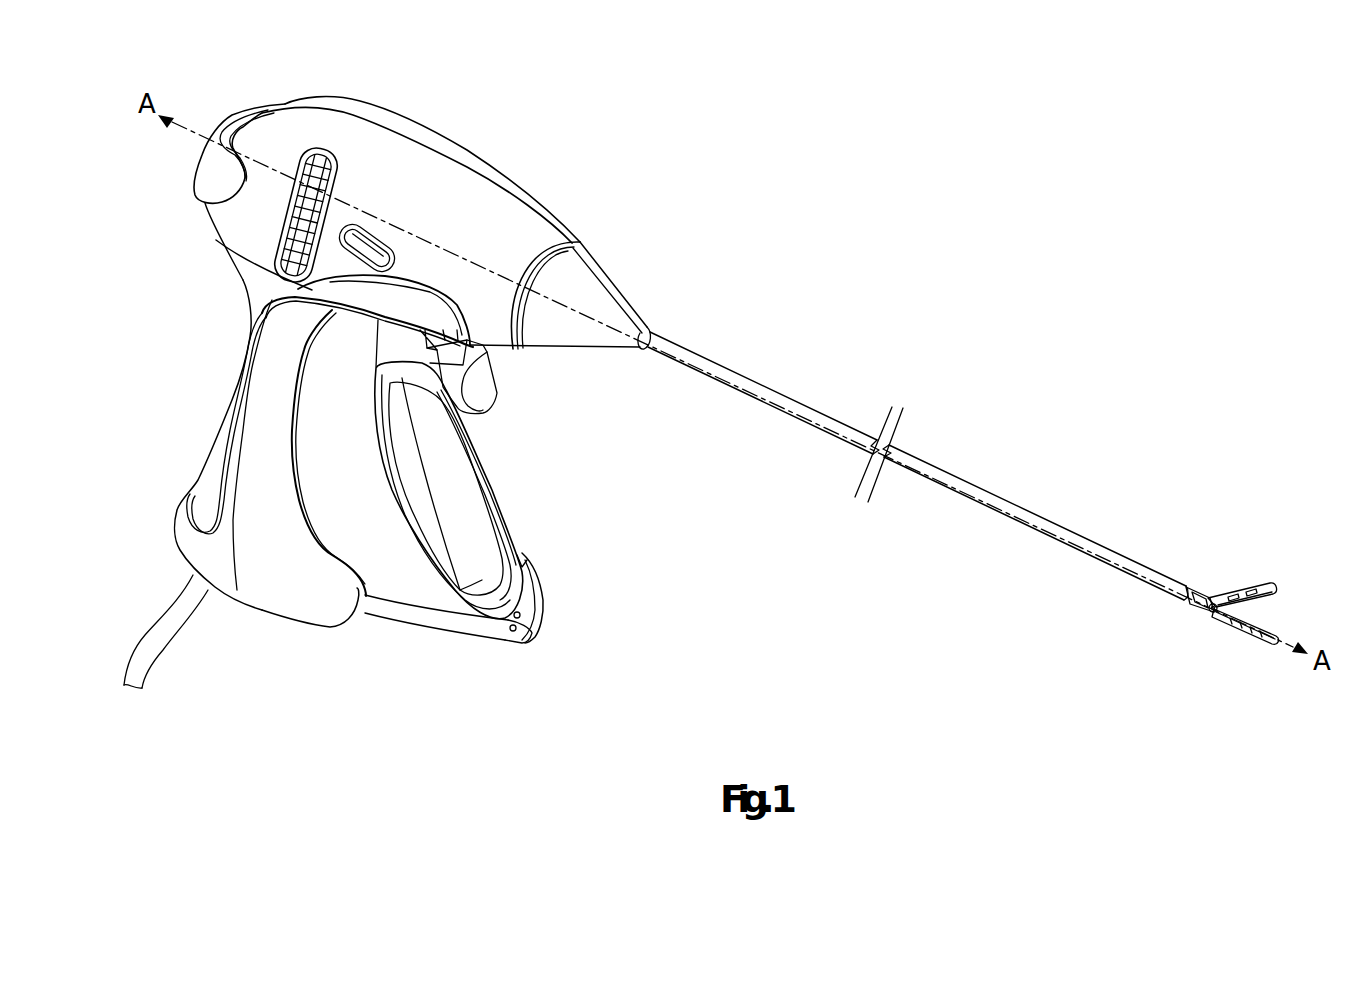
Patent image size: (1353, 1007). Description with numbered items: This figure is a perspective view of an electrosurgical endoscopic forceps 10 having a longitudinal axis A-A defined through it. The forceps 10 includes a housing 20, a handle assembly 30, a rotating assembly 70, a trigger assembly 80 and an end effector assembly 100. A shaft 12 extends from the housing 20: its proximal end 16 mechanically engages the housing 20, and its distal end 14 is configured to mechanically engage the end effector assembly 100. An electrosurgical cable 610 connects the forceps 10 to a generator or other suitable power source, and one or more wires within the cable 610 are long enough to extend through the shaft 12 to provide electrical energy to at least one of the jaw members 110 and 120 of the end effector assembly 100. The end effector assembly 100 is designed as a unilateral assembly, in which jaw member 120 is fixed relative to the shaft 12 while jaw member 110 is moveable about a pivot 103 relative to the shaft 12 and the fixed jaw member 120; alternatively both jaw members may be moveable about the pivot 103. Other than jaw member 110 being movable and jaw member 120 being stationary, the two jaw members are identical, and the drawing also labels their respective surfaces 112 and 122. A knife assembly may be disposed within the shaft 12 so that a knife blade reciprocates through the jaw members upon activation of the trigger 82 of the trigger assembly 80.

The electrosurgical endoscopic forceps 10 is at (733, 224).
The shaft 12 is at (975, 477).
The distal end 14 is at (1172, 580).
The proximal end 16 is at (678, 345).
The housing 20 is at (530, 207).
The handle assembly 30 is at (340, 665).
The rotating assembly 70 is at (322, 150).
The trigger assembly 80 is at (511, 386).
The trigger 82 is at (497, 398).
The end effector assembly 100 is at (1313, 550).
The pivot 103 is at (1196, 606).
The jaw member 110 is at (1278, 586).
The tissue contacting surface of first jaw 112 is at (1283, 600).
The jaw member 120 is at (1265, 642).
The tissue contacting surface of second jaw 122 is at (1280, 635).
The electrosurgical cable 610 is at (143, 661).